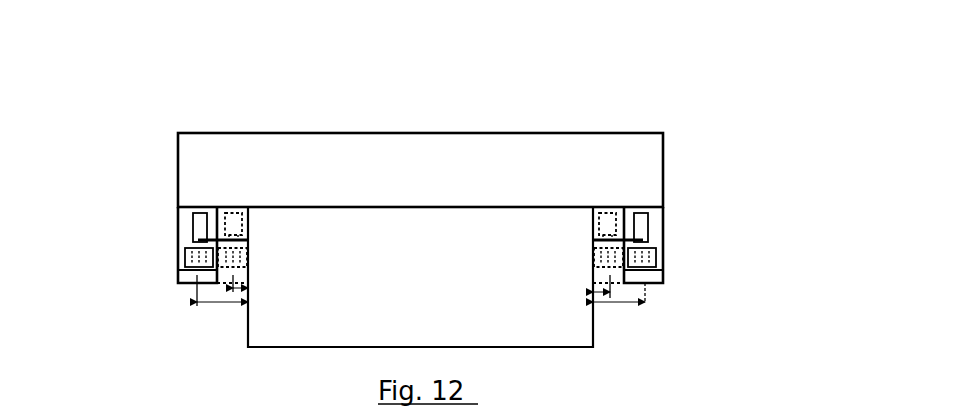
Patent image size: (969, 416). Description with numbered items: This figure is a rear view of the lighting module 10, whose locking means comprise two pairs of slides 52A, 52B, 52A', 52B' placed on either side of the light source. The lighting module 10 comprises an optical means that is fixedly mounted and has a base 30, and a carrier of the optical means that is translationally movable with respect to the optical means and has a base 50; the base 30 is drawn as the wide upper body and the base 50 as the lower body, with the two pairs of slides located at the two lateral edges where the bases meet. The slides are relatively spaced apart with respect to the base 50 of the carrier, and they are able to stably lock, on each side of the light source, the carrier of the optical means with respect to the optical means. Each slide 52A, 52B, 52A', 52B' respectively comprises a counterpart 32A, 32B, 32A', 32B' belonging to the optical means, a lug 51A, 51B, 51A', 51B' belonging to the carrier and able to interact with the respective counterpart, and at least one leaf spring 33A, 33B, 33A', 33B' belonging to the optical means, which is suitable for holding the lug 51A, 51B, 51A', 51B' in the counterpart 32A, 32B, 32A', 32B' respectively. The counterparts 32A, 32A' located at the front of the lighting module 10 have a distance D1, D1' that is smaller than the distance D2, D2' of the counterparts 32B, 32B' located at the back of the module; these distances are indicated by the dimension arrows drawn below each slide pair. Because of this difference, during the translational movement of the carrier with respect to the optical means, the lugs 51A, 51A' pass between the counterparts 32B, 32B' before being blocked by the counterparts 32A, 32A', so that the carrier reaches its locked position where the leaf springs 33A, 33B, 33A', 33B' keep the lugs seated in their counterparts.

The lighting module 10 is at (287, 88).
The base 30 is at (447, 181).
The base 50 is at (430, 340).
The lug 51A is at (561, 226).
The lug 51B is at (694, 217).
The leaf spring 33A is at (561, 258).
The leaf spring 33B is at (694, 257).
The counterpart 32A is at (560, 287).
The counterpart 32B is at (692, 288).
The slide 52A is at (530, 270).
The slide 52B is at (715, 254).
The lug 51A' is at (286, 213).
The lug 51B' is at (147, 202).
The leaf spring 33A' is at (279, 249).
The leaf spring 33B' is at (151, 232).
The counterpart 32A' is at (285, 293).
The counterpart 32B' is at (152, 258).
The slide 52A' is at (325, 246).
The slide 52B' is at (126, 217).
The distance D1 is at (586, 292).
The distance D2 is at (619, 308).
The distance D1' is at (258, 288).
The distance D2' is at (222, 306).